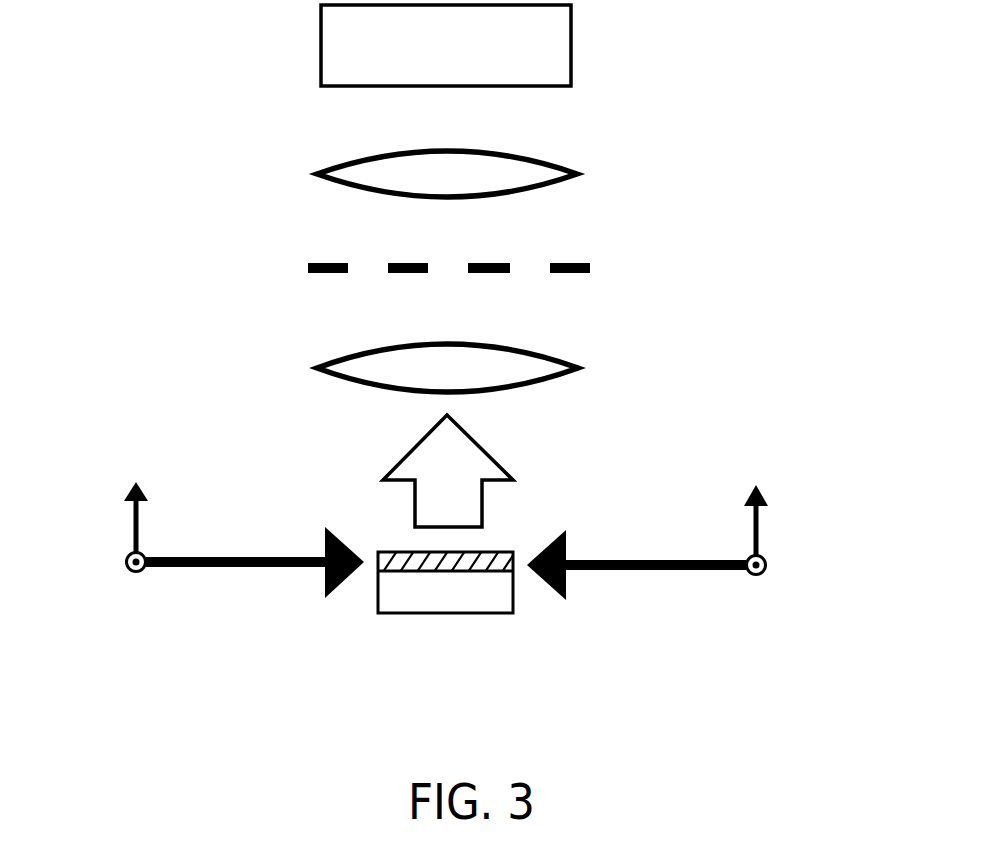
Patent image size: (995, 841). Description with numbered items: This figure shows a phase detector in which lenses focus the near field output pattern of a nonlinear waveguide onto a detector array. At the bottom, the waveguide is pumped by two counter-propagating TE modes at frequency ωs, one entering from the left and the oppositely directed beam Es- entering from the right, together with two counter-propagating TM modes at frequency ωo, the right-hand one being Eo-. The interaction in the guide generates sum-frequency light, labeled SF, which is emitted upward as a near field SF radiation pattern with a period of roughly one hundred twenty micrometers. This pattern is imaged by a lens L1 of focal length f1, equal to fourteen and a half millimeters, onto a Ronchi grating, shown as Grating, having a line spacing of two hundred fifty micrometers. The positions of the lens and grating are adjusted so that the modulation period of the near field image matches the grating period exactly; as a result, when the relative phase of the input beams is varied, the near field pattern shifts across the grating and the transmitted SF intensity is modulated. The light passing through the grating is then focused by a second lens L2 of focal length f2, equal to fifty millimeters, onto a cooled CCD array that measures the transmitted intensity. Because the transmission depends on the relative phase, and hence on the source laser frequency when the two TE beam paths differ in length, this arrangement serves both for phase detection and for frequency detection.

The CCD array CCD is at (446, 45).
The lens L1 is at (341, 358).
The second lens L2 is at (352, 160).
The focal length f1 is at (629, 373).
The focal length f2 is at (629, 177).
The Ronchi grating Grating is at (543, 270).
The sum-frequency light SF is at (448, 471).
The counter-propagating TE mode Es- is at (680, 572).
The counter-propagating TM mode Eo- is at (780, 490).